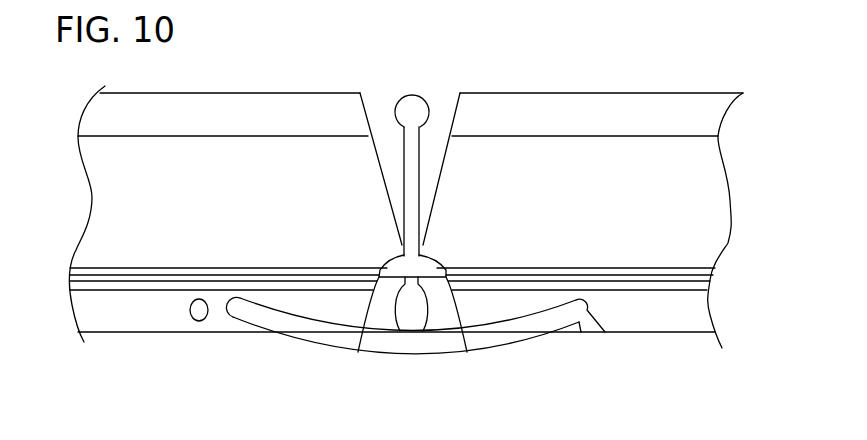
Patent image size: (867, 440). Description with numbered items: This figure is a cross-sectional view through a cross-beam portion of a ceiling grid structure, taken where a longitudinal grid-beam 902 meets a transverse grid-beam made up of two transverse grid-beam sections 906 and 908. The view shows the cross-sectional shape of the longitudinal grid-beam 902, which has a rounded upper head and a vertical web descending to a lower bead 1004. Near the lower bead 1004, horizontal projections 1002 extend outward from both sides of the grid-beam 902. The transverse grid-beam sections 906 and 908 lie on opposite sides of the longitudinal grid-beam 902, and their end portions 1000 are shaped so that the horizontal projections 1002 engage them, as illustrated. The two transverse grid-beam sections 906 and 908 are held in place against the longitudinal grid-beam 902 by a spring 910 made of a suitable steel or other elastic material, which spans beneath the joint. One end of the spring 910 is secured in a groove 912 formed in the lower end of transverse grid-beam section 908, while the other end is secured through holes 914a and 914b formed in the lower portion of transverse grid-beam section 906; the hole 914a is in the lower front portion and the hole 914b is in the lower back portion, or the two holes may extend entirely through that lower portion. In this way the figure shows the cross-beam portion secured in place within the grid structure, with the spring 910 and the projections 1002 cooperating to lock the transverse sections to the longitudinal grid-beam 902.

The longitudinal grid-beam 902 is at (413, 108).
The transverse grid-beam section 906 is at (153, 176).
The transverse grid-beam section 908 is at (625, 171).
The spring 910 is at (307, 327).
The groove 912 is at (599, 344).
The hole 914a is at (232, 313).
The hole 914b is at (193, 309).
The end portions 1000 is at (378, 100).
The horizontal projections 1002 is at (363, 345).
The lower bead 1004 is at (408, 317).